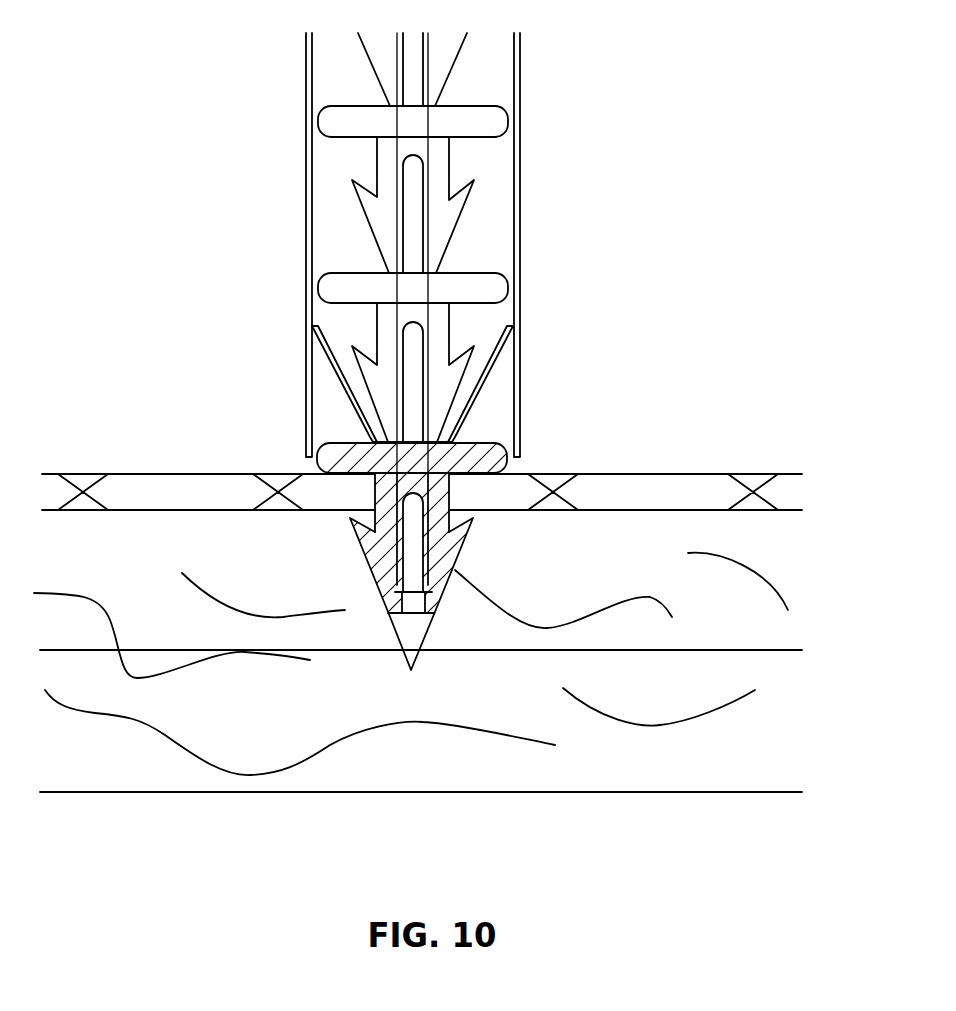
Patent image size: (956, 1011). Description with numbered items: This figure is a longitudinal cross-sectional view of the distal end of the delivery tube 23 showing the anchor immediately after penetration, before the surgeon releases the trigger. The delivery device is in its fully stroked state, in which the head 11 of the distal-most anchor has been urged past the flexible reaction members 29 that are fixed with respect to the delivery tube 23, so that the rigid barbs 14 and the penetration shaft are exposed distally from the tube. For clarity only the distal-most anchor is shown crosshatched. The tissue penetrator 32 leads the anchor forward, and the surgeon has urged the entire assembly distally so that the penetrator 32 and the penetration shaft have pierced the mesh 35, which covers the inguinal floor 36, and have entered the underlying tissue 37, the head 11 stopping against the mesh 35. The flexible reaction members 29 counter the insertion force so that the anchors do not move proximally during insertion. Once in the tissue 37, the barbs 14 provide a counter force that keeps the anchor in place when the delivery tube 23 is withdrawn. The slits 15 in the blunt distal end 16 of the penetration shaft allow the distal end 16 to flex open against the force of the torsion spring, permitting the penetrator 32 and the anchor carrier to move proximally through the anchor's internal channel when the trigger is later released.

The head 11 is at (500, 450).
The rigid barbs 14 is at (465, 538).
The slits 15 is at (407, 585).
The distal end 16 is at (436, 617).
The delivery tube 23 is at (517, 310).
The flexible reaction members 29 is at (497, 375).
The tissue penetrator 32 is at (413, 658).
The mesh 35 is at (767, 487).
The inguinal floor 36 is at (777, 510).
The underlying tissue 37 is at (735, 620).